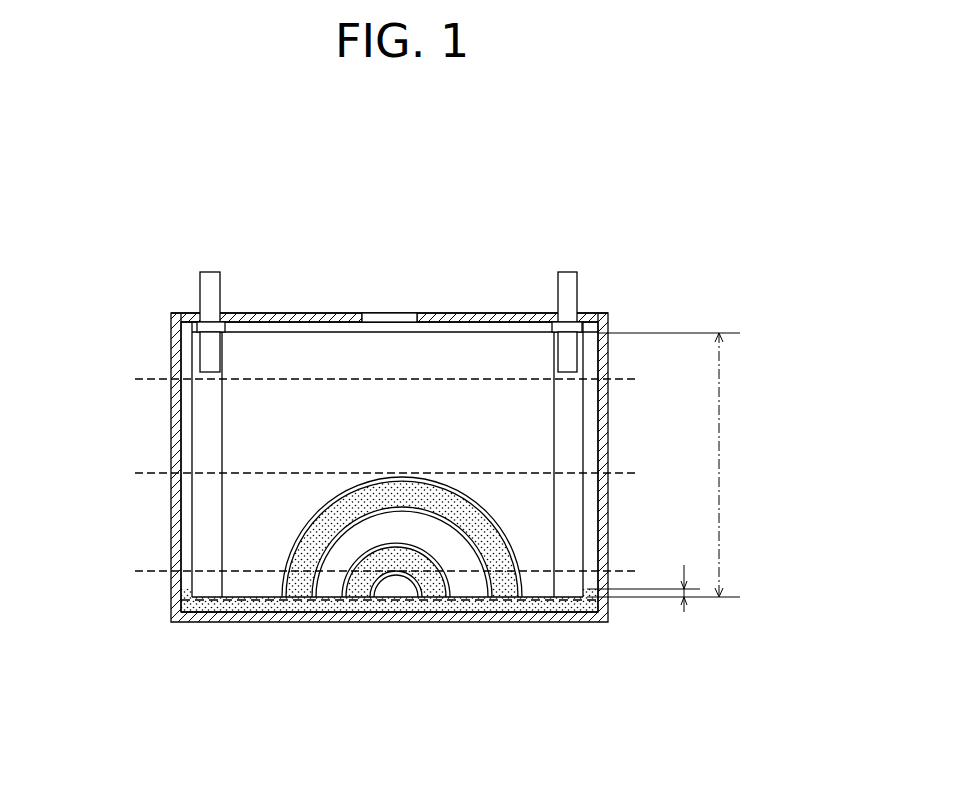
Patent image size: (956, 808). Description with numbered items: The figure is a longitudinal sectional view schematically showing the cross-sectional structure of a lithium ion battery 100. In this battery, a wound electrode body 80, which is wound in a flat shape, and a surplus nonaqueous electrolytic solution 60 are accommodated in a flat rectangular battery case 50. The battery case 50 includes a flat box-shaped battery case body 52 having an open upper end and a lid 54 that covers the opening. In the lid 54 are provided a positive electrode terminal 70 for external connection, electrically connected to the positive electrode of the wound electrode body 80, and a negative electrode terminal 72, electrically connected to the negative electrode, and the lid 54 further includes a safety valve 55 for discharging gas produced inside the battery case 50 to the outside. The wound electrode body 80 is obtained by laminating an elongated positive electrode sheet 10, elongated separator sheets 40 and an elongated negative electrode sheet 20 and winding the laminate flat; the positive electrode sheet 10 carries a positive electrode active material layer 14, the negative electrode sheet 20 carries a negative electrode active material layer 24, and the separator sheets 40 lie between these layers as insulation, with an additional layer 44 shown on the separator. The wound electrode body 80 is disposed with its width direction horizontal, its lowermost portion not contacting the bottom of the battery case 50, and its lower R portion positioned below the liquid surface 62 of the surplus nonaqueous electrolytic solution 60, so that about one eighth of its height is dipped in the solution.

The lithium ion battery 100 is at (606, 213).
The positive electrode sheet 10 is at (298, 585).
The positive electrode active material layer 14 is at (385, 598).
The negative electrode sheet 20 is at (362, 585).
The negative electrode active material layer 24 is at (396, 631).
The separator sheet 40 is at (250, 580).
The separator heat-resistant layer 44 is at (387, 512).
The battery case 50 is at (612, 434).
The battery case body 52 is at (604, 550).
The lid 54 is at (497, 318).
The safety valve 55 is at (383, 318).
The surplus nonaqueous electrolytic solution 60 is at (173, 603).
The liquid surface 62 is at (150, 588).
The positive electrode terminal 70 is at (208, 276).
The negative electrode terminal 72 is at (565, 276).
The wound electrode body 80 is at (535, 603).